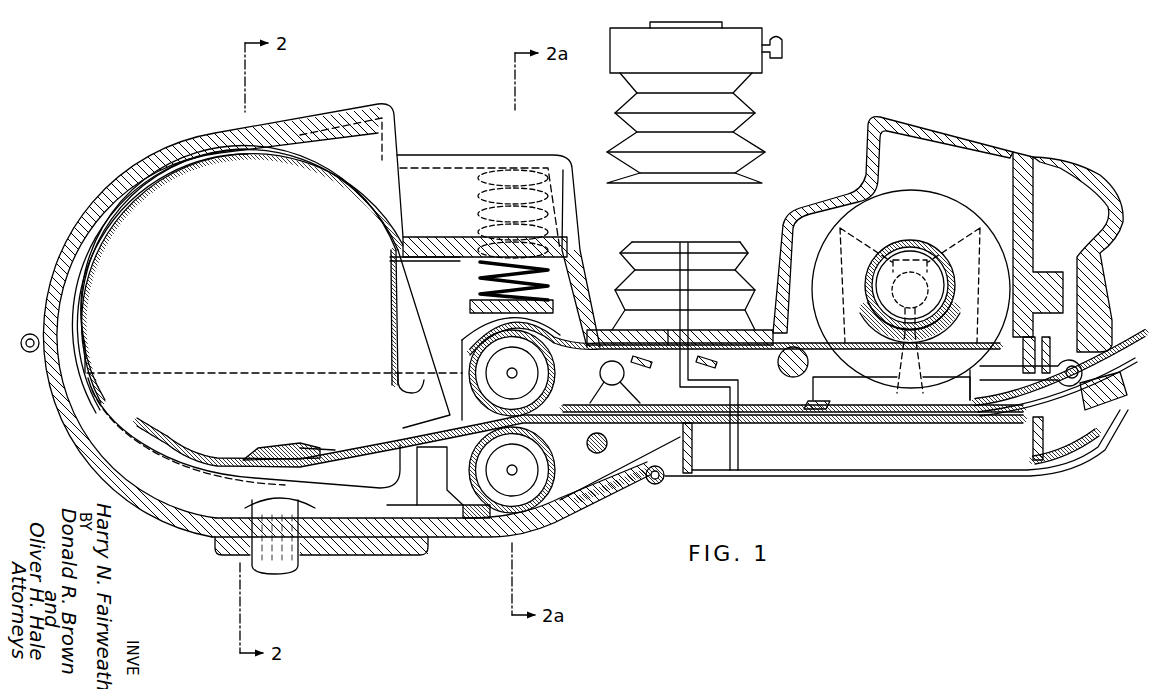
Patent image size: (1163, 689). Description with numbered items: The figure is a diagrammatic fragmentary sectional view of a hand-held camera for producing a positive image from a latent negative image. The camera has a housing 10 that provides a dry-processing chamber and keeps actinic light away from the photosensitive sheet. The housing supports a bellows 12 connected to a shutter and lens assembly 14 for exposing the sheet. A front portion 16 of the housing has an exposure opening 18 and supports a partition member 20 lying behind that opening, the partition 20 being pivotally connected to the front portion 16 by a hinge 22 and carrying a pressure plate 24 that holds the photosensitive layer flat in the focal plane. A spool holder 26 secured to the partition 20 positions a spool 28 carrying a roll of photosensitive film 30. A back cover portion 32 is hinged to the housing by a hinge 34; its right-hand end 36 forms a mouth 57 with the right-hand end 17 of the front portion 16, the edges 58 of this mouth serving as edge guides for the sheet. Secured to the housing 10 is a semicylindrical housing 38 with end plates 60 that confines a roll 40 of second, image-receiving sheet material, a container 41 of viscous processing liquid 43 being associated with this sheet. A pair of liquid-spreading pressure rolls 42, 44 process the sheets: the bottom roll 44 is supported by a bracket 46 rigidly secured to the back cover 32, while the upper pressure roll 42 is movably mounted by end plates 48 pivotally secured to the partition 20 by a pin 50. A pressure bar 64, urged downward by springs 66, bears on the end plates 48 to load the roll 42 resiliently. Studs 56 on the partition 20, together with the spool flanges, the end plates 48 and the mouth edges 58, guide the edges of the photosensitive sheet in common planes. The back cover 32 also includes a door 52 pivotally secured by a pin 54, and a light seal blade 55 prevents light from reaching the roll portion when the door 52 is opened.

The housing 10 is at (302, 114).
The bellows 12 is at (743, 104).
The shutter and lens assembly 14 is at (731, 30).
The front portion 16 is at (583, 250).
The right-hand end of front portion 17 is at (1118, 318).
The exposure opening 18 is at (668, 332).
The partition member 20 is at (776, 404).
The hinge 22 is at (1057, 364).
The pressure plate 24 is at (645, 352).
The spool holder 26 is at (950, 392).
The spool 28 is at (937, 207).
The photosensitive film 30 is at (862, 346).
The back cover portion 32 is at (432, 538).
The hinge 34 is at (30, 334).
The right-hand end of back cover 36 is at (1113, 400).
The semicylindrical housing 38 is at (398, 303).
The roll of second sheet material 40 is at (363, 455).
The container 41 is at (318, 445).
The upper pressure roll 42 is at (475, 355).
The liquid 43 is at (282, 446).
The bottom roll 44 is at (547, 495).
The bracket 46 is at (449, 486).
The end plates 48 is at (560, 345).
The pin 50 is at (603, 369).
The door 52 is at (793, 428).
The pin 54 is at (663, 482).
The light seal blade 55 is at (622, 430).
The studs 56 is at (858, 412).
The mouth 57 is at (1130, 375).
The edges of mouth 58 is at (1130, 343).
The end plates 60 is at (278, 274).
The pressure bar 64 is at (472, 308).
The springs 66 is at (478, 278).